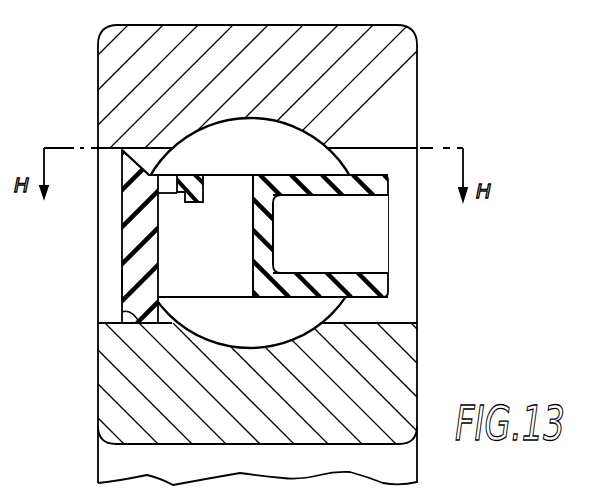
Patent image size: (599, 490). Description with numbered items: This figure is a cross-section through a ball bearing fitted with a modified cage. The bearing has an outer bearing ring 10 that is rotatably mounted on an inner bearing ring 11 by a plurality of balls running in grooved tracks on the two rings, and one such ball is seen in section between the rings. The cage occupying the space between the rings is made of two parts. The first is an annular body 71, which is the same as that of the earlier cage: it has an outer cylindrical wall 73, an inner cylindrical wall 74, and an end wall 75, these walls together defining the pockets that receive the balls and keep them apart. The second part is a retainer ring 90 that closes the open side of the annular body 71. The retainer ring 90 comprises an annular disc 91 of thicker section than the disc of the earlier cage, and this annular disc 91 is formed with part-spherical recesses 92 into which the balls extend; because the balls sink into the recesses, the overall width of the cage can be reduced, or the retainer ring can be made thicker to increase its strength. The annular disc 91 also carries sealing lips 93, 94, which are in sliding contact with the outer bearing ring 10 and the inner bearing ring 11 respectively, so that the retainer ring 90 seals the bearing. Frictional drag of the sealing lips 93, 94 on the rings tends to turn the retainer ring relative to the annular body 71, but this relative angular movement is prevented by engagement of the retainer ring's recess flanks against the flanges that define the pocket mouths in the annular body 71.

The outer bearing ring 10 is at (98, 57).
The inner bearing ring 11 is at (99, 364).
The annular body 71 is at (321, 236).
The outer cylindrical wall 73 is at (350, 183).
The inner cylindrical wall 74 is at (348, 280).
The end wall 75 is at (270, 230).
The retainer ring 90 is at (122, 249).
The annular disc 91 is at (122, 284).
The part-spherical recess 92 is at (160, 196).
The sealing lip 93 is at (126, 166).
The sealing lip 94 is at (120, 317).